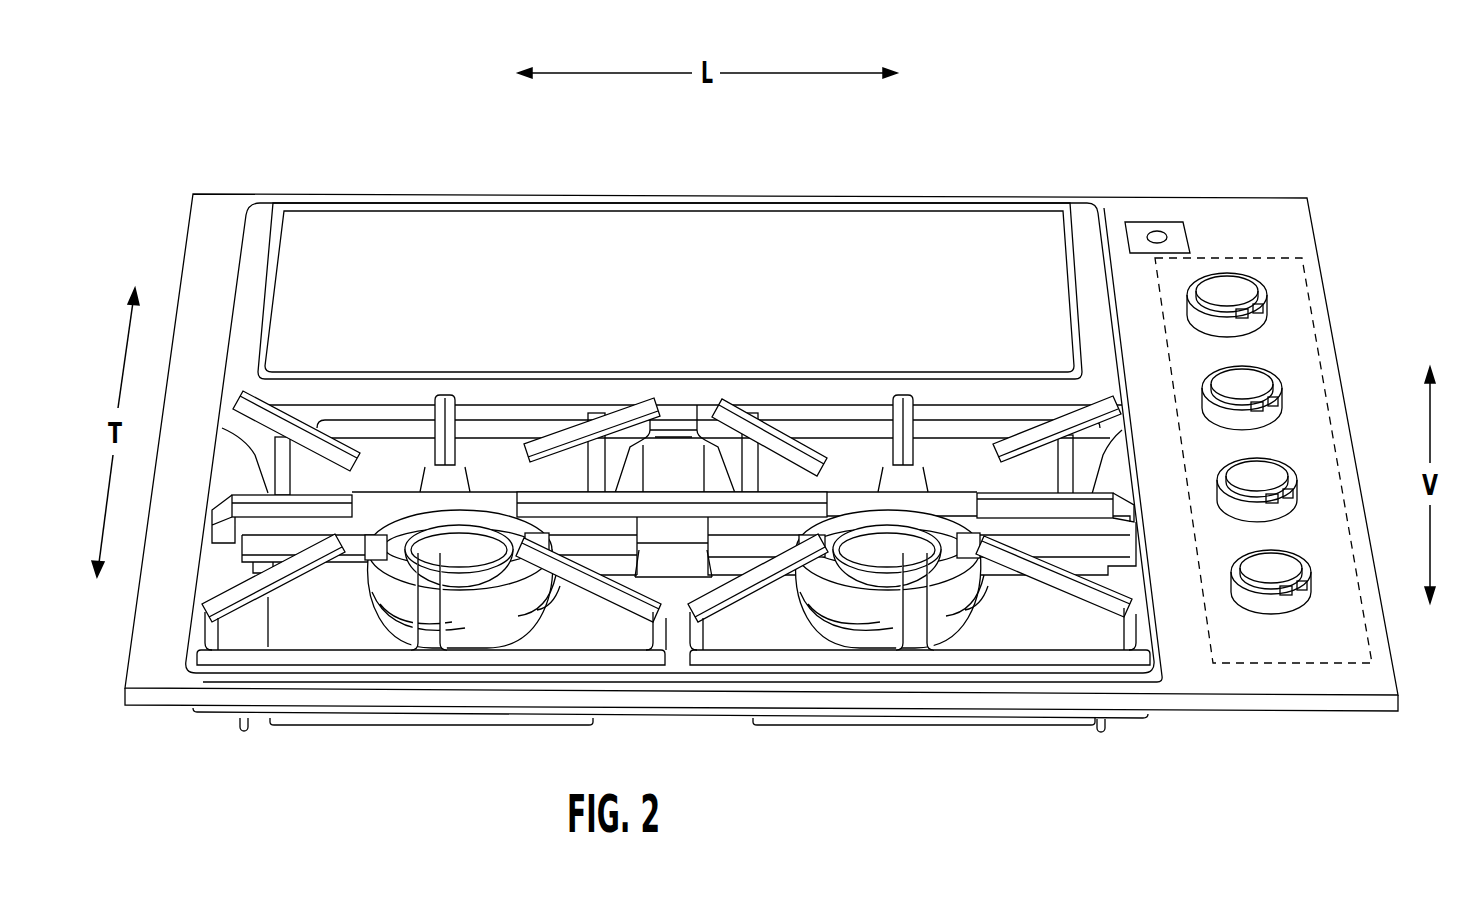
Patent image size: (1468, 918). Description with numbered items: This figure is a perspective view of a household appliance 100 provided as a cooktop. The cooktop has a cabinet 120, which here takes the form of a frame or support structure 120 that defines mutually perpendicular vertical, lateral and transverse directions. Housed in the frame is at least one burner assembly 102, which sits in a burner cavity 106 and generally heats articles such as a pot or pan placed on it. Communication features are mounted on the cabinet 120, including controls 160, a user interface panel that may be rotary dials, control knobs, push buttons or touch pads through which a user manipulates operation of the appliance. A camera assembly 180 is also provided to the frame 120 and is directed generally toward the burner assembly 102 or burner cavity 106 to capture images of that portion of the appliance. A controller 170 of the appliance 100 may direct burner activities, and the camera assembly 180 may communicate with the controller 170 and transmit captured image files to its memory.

The household appliance 100 is at (1259, 130).
The burner assembly 102 is at (1032, 630).
The burner cavity 106 is at (776, 652).
The cabinet 120 is at (1242, 223).
The controls 160 is at (1248, 382).
The controller 170 is at (1367, 632).
The camera assembly 180 is at (1146, 222).